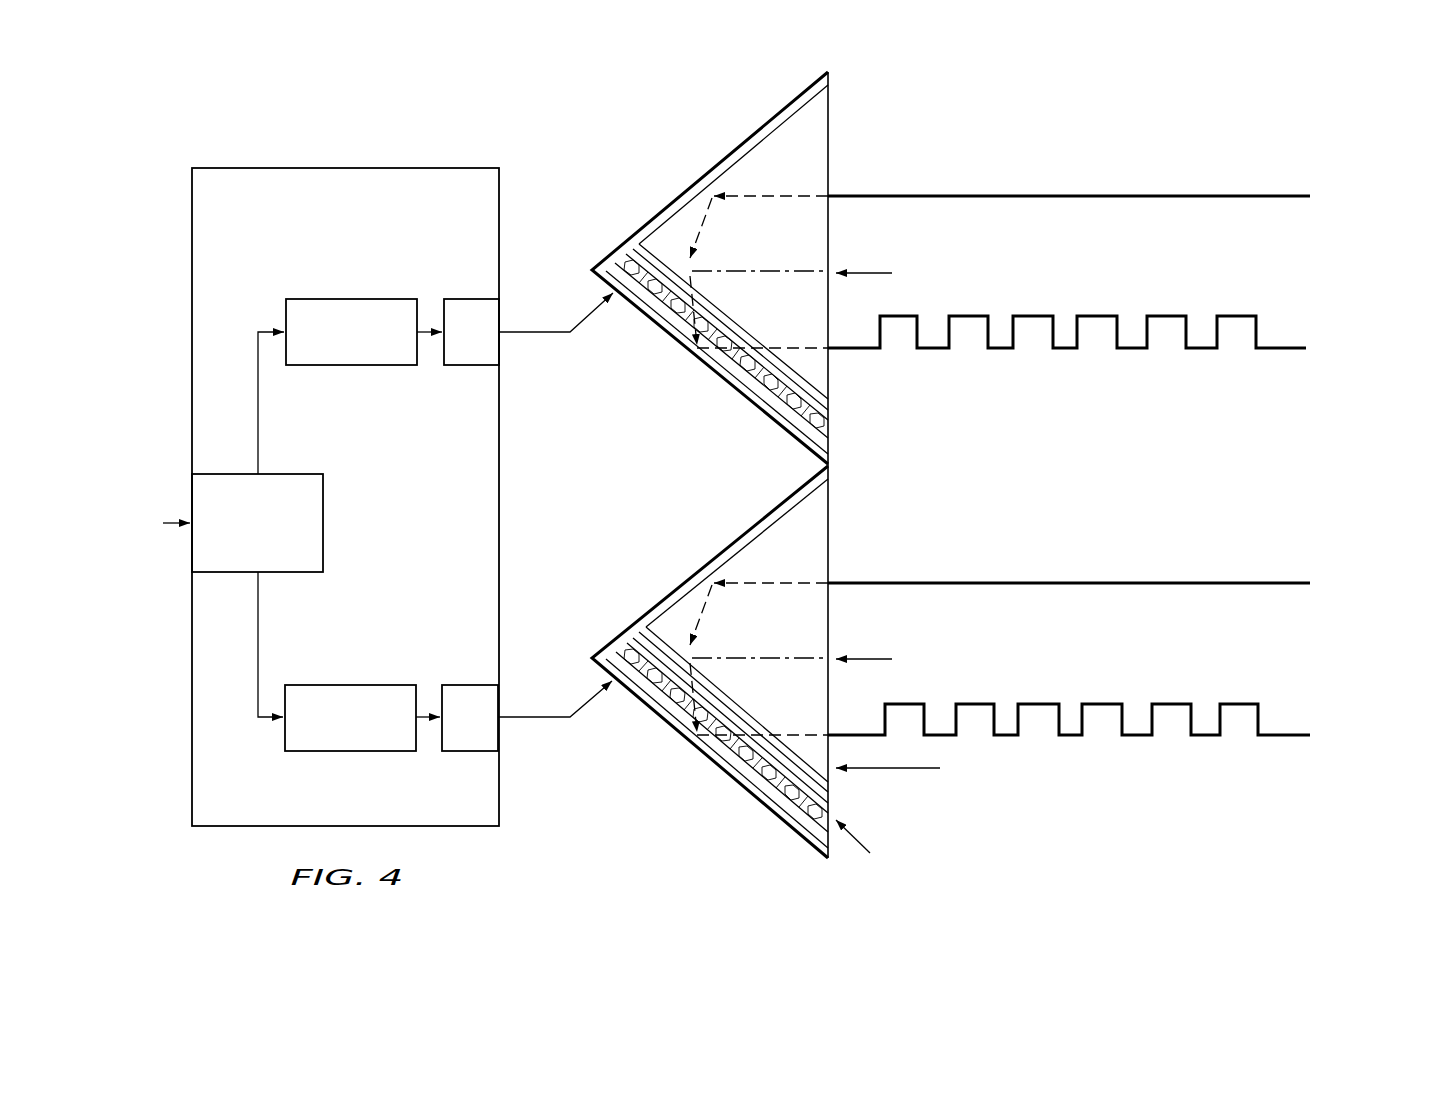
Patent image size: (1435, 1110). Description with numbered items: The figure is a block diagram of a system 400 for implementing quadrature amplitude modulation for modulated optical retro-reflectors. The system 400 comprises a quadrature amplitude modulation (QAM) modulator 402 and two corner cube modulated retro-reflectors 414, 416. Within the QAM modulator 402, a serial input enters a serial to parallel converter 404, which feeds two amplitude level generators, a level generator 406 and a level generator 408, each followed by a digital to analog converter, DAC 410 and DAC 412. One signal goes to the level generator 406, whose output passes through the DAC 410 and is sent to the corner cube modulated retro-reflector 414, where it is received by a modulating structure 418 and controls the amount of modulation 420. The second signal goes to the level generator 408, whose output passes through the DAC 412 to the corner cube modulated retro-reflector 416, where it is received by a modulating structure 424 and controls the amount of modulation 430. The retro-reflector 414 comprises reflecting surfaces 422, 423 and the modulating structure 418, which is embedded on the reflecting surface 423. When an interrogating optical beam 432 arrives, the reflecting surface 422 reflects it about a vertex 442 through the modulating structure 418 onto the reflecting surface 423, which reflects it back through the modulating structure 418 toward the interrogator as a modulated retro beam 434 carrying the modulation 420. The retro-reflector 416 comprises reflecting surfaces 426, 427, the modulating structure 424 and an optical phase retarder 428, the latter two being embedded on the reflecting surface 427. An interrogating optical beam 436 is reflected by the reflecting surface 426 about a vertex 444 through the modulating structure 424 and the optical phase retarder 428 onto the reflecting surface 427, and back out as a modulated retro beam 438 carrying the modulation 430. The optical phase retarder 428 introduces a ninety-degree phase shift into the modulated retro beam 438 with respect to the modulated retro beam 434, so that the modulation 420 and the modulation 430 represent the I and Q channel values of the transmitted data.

The system 400 is at (178, 95).
The quadrature amplitude modulation (QAM) modulator 402 is at (304, 166).
The serial to parallel converter 404 is at (325, 500).
The level generator 406 is at (350, 297).
The level generator 408 is at (349, 753).
The DAC 410 is at (469, 297).
The DAC 412 is at (466, 753).
The corner cube modulated retro-reflector 414 is at (646, 220).
The corner cube modulated retro-reflector 416 is at (646, 708).
The modulating structure 418 is at (836, 426).
The modulation 420 is at (1193, 369).
The reflecting surface 422 is at (735, 152).
The reflecting surface 423 is at (648, 305).
The modulating structure 424 is at (850, 836).
The reflecting surface 426 is at (660, 600).
The reflecting surface 427 is at (740, 790).
The optical phase retarder 428 is at (908, 768).
The modulation 430 is at (1198, 755).
The interrogating optical beam 432 is at (1012, 195).
The modulated retro beam 434 is at (1355, 393).
The interrogating optical beam 436 is at (1020, 582).
The modulated retro beam 438 is at (1324, 782).
The vertex 442 is at (866, 272).
The vertex 444 is at (866, 659).